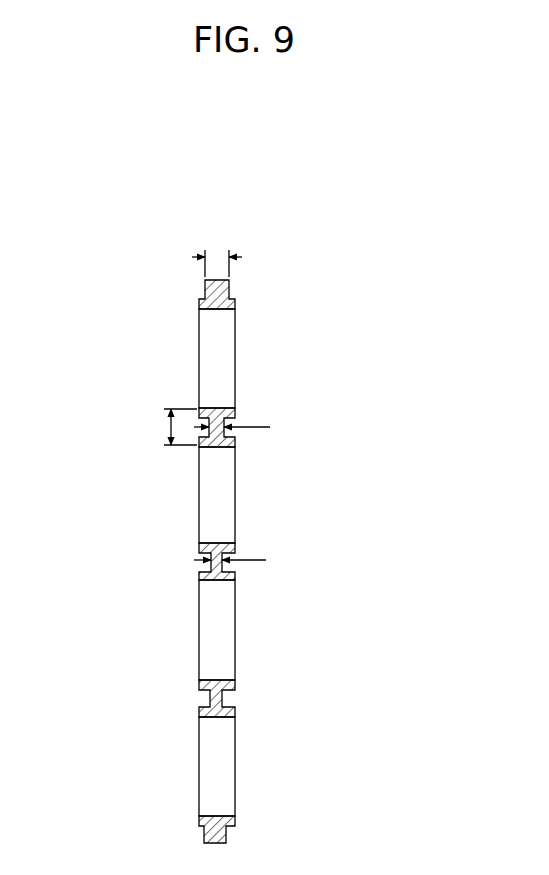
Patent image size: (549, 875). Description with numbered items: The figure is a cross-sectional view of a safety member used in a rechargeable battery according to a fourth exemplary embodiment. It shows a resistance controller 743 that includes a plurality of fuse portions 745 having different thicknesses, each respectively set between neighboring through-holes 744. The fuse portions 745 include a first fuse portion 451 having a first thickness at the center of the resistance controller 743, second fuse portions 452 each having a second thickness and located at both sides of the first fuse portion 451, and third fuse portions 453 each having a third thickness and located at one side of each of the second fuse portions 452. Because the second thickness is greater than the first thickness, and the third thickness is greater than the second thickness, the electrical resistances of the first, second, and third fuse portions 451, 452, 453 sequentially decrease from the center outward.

The resistance controller 743 is at (331, 339).
The through-holes 744 is at (220, 632).
The fuse portions 745 is at (96, 819).
The first fuse portion 451 is at (199, 566).
The second fuse portions 452 is at (212, 697).
The third fuse portions 453 is at (205, 836).